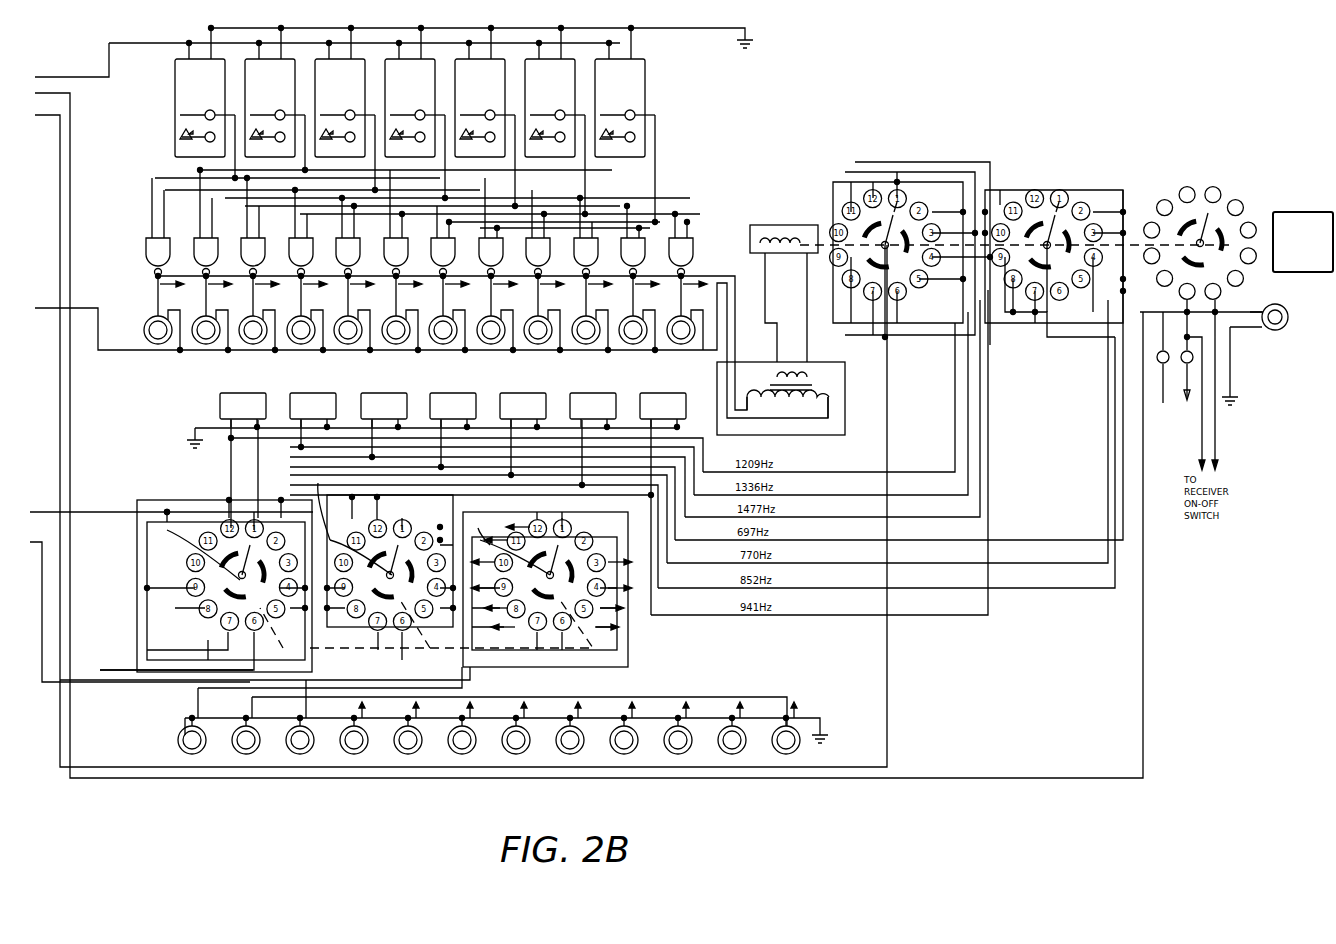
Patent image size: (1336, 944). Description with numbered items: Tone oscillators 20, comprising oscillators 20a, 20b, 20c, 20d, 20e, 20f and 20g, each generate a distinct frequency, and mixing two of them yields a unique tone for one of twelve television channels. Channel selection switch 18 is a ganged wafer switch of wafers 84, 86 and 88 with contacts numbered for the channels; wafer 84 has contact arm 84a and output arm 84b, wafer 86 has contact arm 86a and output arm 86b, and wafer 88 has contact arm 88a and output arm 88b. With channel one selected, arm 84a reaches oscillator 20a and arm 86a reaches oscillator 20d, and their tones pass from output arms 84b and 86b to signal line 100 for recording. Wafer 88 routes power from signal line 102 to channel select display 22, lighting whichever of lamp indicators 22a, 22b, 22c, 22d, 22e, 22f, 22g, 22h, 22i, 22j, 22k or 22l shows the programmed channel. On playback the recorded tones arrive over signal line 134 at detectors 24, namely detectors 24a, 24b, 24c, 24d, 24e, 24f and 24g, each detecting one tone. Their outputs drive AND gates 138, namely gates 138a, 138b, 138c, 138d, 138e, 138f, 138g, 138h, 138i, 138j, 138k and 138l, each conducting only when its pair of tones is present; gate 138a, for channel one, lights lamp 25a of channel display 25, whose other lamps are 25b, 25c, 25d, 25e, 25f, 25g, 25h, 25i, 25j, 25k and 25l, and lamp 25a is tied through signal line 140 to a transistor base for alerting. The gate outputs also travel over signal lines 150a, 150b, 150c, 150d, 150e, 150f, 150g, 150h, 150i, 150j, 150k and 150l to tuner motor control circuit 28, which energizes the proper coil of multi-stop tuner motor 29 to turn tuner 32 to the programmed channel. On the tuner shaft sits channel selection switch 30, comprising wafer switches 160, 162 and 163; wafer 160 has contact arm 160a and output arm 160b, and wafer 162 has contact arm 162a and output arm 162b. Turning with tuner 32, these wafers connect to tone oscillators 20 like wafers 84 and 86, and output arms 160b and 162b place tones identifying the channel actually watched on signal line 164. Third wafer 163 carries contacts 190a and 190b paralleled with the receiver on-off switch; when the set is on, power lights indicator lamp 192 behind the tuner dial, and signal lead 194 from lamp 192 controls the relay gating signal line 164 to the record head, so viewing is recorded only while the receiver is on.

The channel selection switch 18 is at (608, 655).
The tone oscillators 20 is at (212, 406).
The oscillator 20a is at (246, 392).
The oscillator 20b is at (318, 392).
The oscillator 20c is at (388, 392).
The oscillator 20d is at (458, 392).
The oscillator 20e is at (528, 392).
The oscillator 20f is at (598, 392).
The oscillator 20g is at (668, 392).
The channel select display 22 is at (812, 754).
The lamp indicator 22a is at (188, 754).
The lamp indicator 22b is at (245, 754).
The lamp indicator 22c is at (298, 754).
The lamp indicator 22d is at (352, 754).
The lamp indicator 22e is at (406, 754).
The lamp indicator 22f is at (460, 754).
The lamp indicator 22g is at (514, 754).
The lamp indicator 22h is at (568, 754).
The lamp indicator 22i is at (622, 754).
The lamp indicator 22j is at (676, 754).
The lamp indicator 22k is at (730, 754).
The lamp indicator 22l is at (783, 754).
The detectors 24 is at (682, 108).
The detector 24a is at (186, 78).
The detector 24b is at (256, 78).
The detector 24c is at (326, 78).
The detector 24d is at (396, 78).
The detector 24e is at (466, 78).
The detector 24f is at (536, 78).
The detector 24g is at (606, 78).
The channel display 25 is at (142, 322).
The channel display lamp 25a is at (165, 345).
The channel display lamp 25b is at (213, 345).
The channel display lamp 25c is at (260, 345).
The channel display lamp 25d is at (308, 345).
The channel display lamp 25e is at (355, 345).
The channel display lamp 25f is at (403, 345).
The channel display lamp 25g is at (450, 345).
The channel display lamp 25h is at (498, 345).
The channel display lamp 25i is at (545, 345).
The channel display lamp 25j is at (593, 345).
The channel display lamp 25k is at (640, 345).
The channel display lamp 25l is at (688, 345).
The tuner motor control circuit 28 is at (812, 434).
The tuner motor 29 is at (797, 222).
The channel selection switch 30 is at (1212, 96).
The tuner 32 is at (1303, 208).
The wafer switch 84 is at (202, 574).
The contact arm 84a is at (248, 528).
The output arm 84b is at (168, 530).
The wafer switch 86 is at (384, 564).
The contact arm 86a is at (403, 528).
The output arm 86b is at (326, 504).
The wafer switch 88 is at (547, 588).
The contact arm 88a is at (565, 530).
The output arm 88b is at (476, 529).
The signal line 100 is at (102, 512).
The signal line 102 is at (103, 682).
The signal line 134 is at (100, 77).
The AND gate 138 is at (143, 253).
The AND gate 138a is at (162, 252).
The AND gate 138b is at (205, 252).
The AND gate 138c is at (252, 252).
The AND gate 138d is at (302, 250).
The AND gate 138e is at (349, 252).
The AND gate 138f is at (397, 252).
The AND gate 138g is at (444, 252).
The AND gate 138h is at (492, 250).
The AND gate 138i is at (539, 252).
The AND gate 138j is at (590, 246).
The AND gate 138k is at (637, 250).
The AND gate 138l is at (684, 250).
The signal line 140 is at (431, 350).
The signal line 150a is at (180, 293).
The signal line 150b is at (227, 295).
The signal line 150c is at (274, 293).
The signal line 150d is at (321, 295).
The signal line 150e is at (369, 293).
The signal line 150f is at (416, 295).
The signal line 150g is at (464, 293).
The signal line 150h is at (511, 295).
The signal line 150i is at (555, 293).
The signal line 150j is at (604, 295).
The signal line 150k is at (654, 293).
The signal line 150l is at (700, 293).
The wafer switch 160 is at (912, 159).
The contact arm 160a is at (898, 213).
The output arm 160b is at (880, 315).
The wafer switch 162 is at (1065, 159).
The contact arm 162a is at (1060, 212).
The output arm 162b is at (1052, 305).
The third wafer switch 163 is at (1218, 159).
The signal line 164 is at (62, 160).
The contact 190a is at (1162, 375).
The contact 190b is at (1184, 405).
The indicator lamp 192 is at (1278, 330).
The signal lead 194 is at (72, 130).